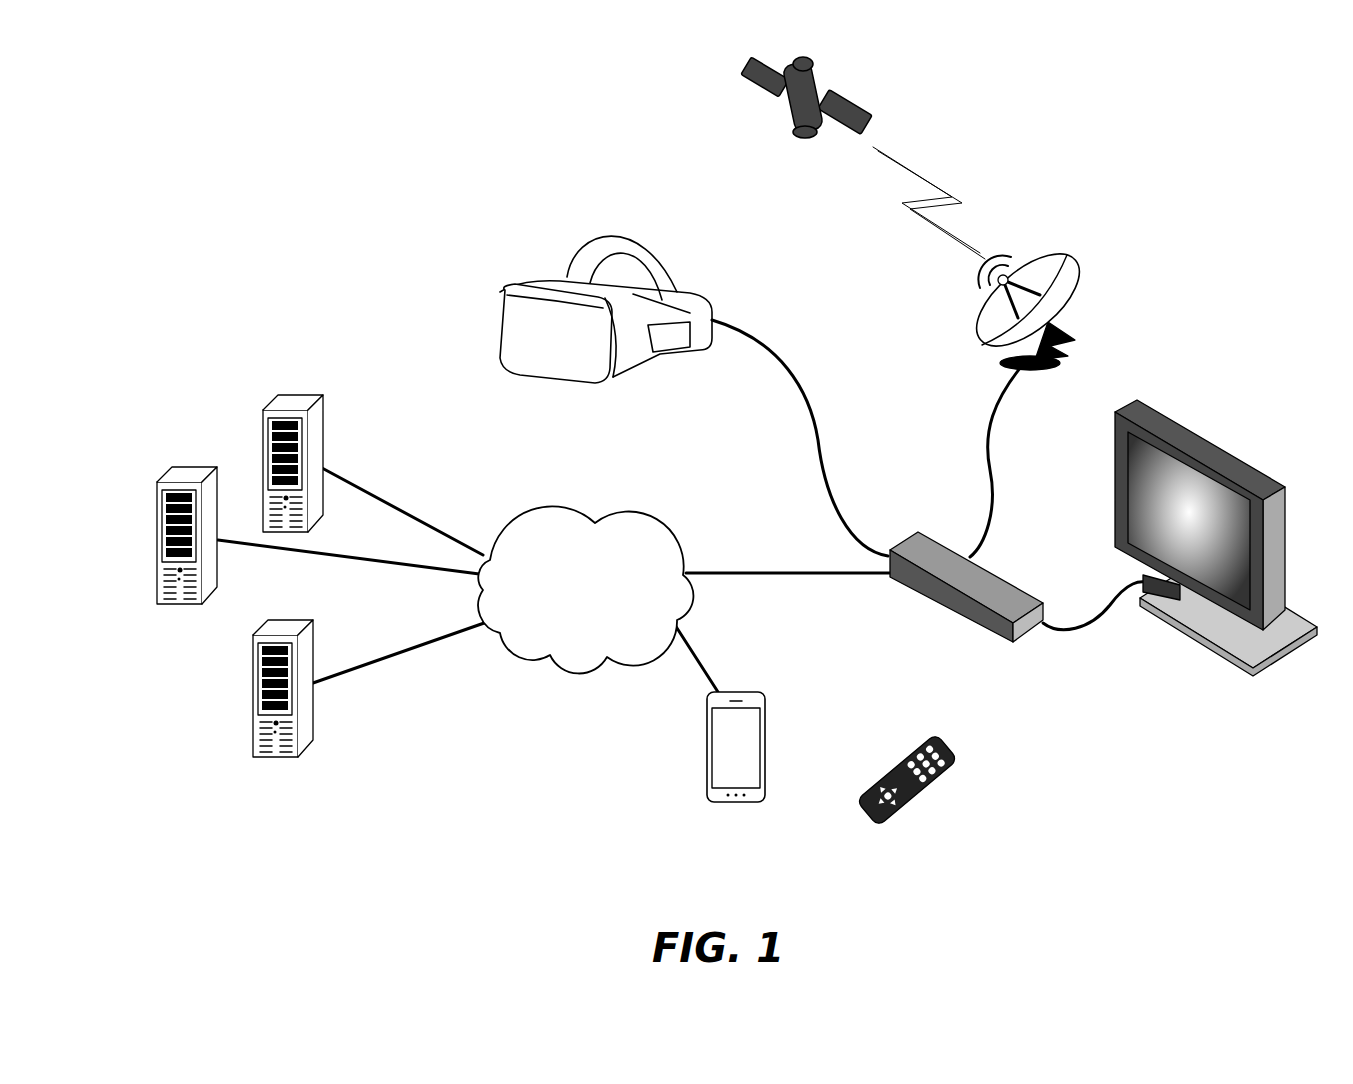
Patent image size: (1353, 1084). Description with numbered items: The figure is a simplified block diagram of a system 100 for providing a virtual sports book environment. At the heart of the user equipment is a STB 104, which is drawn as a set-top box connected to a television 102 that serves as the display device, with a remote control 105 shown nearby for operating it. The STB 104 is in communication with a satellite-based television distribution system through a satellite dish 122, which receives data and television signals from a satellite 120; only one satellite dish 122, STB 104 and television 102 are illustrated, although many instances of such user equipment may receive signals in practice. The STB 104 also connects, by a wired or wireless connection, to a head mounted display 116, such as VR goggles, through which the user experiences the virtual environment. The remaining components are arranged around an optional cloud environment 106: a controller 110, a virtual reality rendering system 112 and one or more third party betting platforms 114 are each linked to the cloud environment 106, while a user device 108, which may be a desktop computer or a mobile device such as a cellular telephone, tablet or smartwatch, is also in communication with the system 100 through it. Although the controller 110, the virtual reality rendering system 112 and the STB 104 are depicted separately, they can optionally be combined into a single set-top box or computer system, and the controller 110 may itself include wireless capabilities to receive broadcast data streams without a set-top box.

The system 100 is at (298, 130).
The television 102 is at (1185, 418).
The STB 104 is at (985, 632).
The remote control 105 is at (923, 800).
The cloud environment 106 is at (571, 672).
The user device 108 is at (768, 730).
The controller 110 is at (262, 412).
The virtual reality rendering system 112 is at (160, 478).
The third party betting platform 114 is at (252, 660).
The head mounted display 116 is at (530, 283).
The satellite 120 is at (845, 102).
The satellite dish 122 is at (1065, 258).